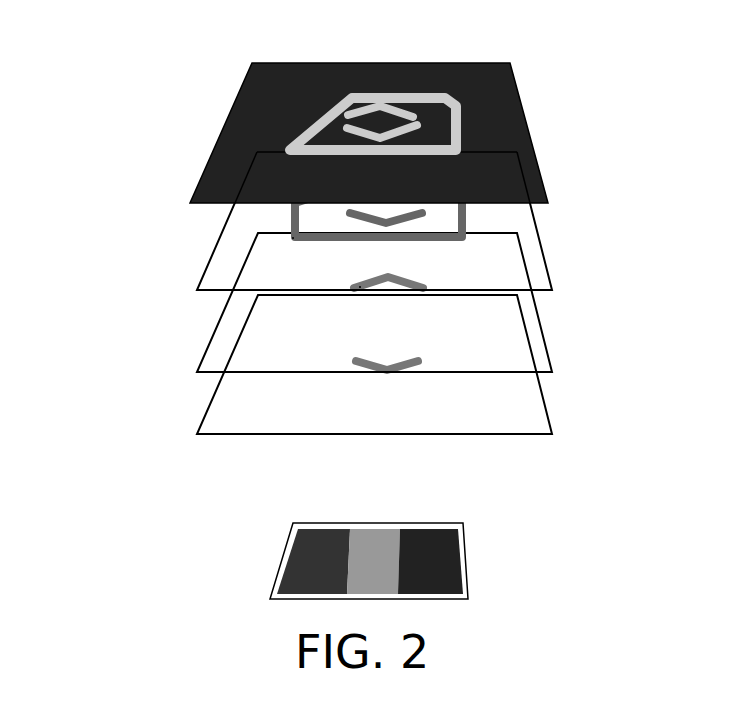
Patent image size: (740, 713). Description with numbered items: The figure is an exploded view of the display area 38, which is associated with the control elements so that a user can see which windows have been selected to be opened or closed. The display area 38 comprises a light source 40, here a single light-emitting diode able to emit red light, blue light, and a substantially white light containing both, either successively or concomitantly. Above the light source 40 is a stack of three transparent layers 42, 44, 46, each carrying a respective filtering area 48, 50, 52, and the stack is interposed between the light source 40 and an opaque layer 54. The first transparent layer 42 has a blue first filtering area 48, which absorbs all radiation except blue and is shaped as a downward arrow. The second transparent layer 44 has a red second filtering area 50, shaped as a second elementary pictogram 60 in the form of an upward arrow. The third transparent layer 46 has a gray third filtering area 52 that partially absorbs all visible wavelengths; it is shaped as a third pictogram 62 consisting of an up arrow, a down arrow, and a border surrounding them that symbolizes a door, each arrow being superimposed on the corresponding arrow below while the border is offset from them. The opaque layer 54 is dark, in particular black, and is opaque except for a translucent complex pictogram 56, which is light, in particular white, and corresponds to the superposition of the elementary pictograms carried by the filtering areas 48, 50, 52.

The display area 38 is at (112, 80).
The light source 40 is at (280, 563).
The first transparent layer 42 is at (367, 397).
The second transparent layer 44 is at (370, 366).
The third transparent layer 46 is at (378, 326).
The first filtering area 48 is at (419, 361).
The second filtering area 50 is at (426, 289).
The third filtering area 52 is at (462, 238).
The opaque layer 54 is at (391, 119).
The complex pictogram 56 is at (458, 140).
The second elementary pictogram 60 is at (360, 287).
The third pictogram 62 is at (293, 238).